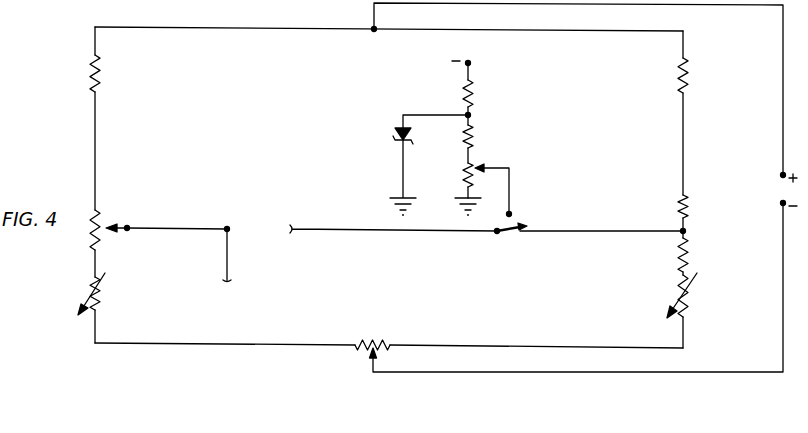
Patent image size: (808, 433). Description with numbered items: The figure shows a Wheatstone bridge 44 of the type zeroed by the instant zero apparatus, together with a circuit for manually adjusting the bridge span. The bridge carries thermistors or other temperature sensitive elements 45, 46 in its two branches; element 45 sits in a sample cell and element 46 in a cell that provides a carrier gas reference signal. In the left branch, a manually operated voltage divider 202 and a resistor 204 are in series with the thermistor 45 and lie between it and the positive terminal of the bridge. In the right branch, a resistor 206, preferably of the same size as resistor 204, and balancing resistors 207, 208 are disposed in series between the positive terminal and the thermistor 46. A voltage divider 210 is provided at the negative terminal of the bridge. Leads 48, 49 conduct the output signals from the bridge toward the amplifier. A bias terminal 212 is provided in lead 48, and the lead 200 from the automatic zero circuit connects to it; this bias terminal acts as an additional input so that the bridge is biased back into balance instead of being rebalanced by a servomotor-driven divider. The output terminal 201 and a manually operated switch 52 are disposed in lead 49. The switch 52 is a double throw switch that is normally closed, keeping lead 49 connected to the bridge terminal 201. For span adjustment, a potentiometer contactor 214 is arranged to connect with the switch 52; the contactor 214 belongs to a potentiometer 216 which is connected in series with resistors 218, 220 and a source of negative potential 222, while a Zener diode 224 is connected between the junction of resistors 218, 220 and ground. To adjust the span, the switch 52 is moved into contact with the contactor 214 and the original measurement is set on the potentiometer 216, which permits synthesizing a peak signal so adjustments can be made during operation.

The Wheatstone bridge 44 is at (277, 170).
The temperature sensitive element 45 is at (100, 296).
The temperature sensitive element 46 is at (690, 300).
The lead 48 is at (180, 227).
The lead 49 is at (305, 230).
The manually operated switch 52 is at (512, 232).
The lead 200 is at (228, 258).
The output terminal 201 is at (680, 235).
The manually operated voltage divider 202 is at (101, 215).
The resistor 204 is at (100, 60).
The resistor 206 is at (688, 62).
The balancing resistor 207 is at (688, 207).
The balancing resistor 208 is at (688, 246).
The voltage divider 210 is at (373, 340).
The bias terminal 212 is at (227, 228).
The potentiometer contactor 214 is at (510, 213).
The potentiometer 216 is at (466, 165).
The resistor 218 is at (472, 128).
The resistor 220 is at (473, 90).
The source of negative potential 222 is at (469, 62).
The Zener diode 224 is at (395, 136).